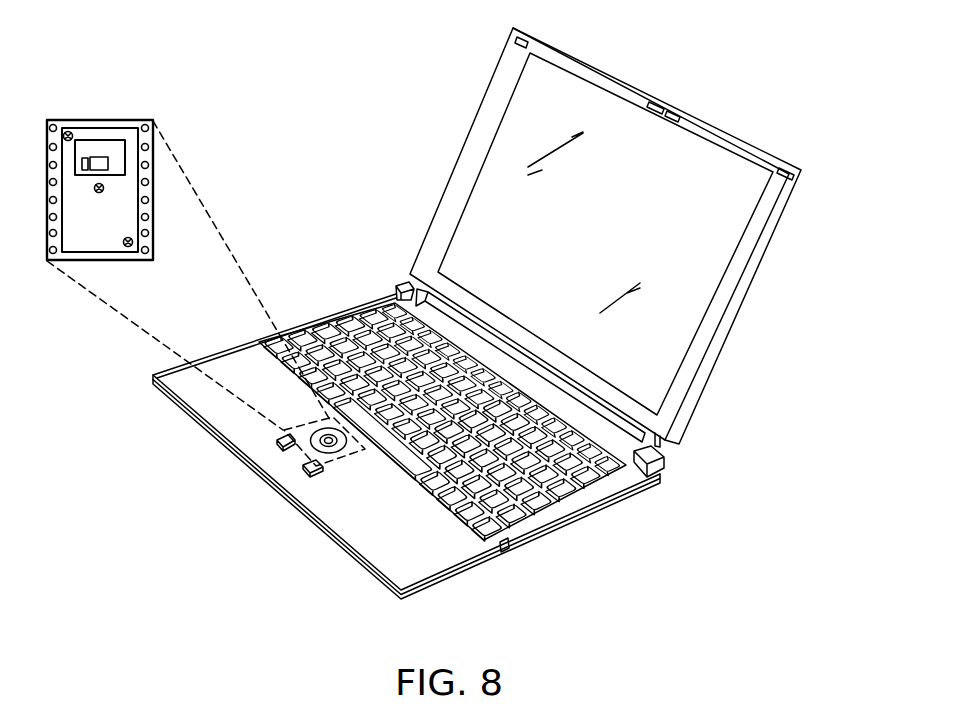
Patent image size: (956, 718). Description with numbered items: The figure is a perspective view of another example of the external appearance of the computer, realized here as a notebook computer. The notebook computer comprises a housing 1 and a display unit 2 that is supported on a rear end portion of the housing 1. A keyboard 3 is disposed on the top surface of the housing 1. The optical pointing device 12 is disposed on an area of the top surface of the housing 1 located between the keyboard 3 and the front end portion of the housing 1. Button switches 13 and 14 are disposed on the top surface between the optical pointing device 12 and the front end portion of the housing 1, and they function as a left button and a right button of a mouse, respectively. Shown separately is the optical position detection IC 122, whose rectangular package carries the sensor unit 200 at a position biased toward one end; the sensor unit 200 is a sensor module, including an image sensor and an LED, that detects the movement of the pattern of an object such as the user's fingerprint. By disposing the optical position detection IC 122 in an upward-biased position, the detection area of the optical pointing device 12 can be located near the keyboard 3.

The housing 1 is at (468, 564).
The display unit 2 is at (775, 202).
The keyboard 3 is at (327, 356).
The optical pointing device 12 is at (336, 452).
The button switch 13 is at (308, 475).
The button switch 14 is at (277, 445).
The optical position detection IC 122 is at (102, 157).
The sensor unit 200 is at (97, 147).